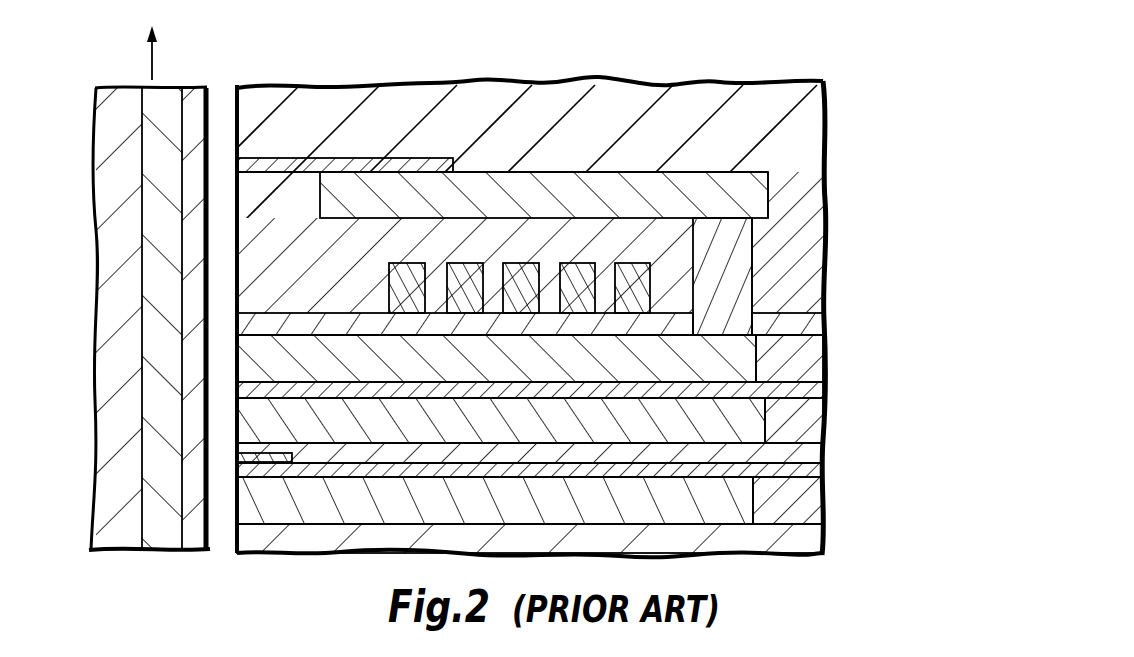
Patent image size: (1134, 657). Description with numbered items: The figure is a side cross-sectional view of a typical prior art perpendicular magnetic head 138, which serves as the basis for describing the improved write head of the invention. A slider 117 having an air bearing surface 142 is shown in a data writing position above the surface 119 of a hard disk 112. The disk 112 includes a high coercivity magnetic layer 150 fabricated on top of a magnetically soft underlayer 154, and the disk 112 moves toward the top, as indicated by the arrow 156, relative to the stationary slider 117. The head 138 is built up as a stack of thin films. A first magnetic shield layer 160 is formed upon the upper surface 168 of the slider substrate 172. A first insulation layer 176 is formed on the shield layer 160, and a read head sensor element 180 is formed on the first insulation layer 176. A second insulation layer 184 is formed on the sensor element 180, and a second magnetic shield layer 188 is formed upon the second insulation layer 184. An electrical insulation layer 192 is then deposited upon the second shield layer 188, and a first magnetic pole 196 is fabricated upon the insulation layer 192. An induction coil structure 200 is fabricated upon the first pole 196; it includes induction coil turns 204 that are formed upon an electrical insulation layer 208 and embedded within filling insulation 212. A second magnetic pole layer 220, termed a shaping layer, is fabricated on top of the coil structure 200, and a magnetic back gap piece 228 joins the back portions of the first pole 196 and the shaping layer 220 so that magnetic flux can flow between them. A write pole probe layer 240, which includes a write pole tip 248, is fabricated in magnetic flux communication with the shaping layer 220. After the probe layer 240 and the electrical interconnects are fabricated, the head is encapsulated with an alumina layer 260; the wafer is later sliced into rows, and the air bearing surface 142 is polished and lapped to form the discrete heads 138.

The hard disk 112 is at (108, 100).
The slider 117 is at (367, 550).
The surface of hard disk 119 is at (203, 533).
The perpendicular magnetic head 138 is at (389, 72).
The air bearing surface 142 is at (238, 96).
The high coercivity magnetic layer 150 is at (173, 547).
The magnetically soft underlayer 154 is at (157, 532).
The arrow 156 is at (148, 58).
The first magnetic shield layer 160 is at (745, 505).
The upper surface of slider substrate 168 is at (740, 535).
The slider substrate 172 is at (748, 545).
The first insulation layer 176 is at (800, 474).
The read head sensor element 180 is at (268, 452).
The second insulation layer 184 is at (805, 456).
The second magnetic shield layer 188 is at (752, 428).
The electrical insulation layer 192 is at (800, 390).
The first magnetic pole 196 is at (742, 366).
The induction coil structure 200 is at (680, 270).
The induction coil turns 204 is at (552, 268).
The electrical insulation layer 208 is at (683, 327).
The filling insulation 212 is at (341, 269).
The second magnetic pole layer 220 is at (752, 205).
The magnetic back gap piece 228 is at (735, 283).
The write pole probe layer 240 is at (340, 162).
The write pole tip 248 is at (258, 160).
The alumina layer 260 is at (608, 140).